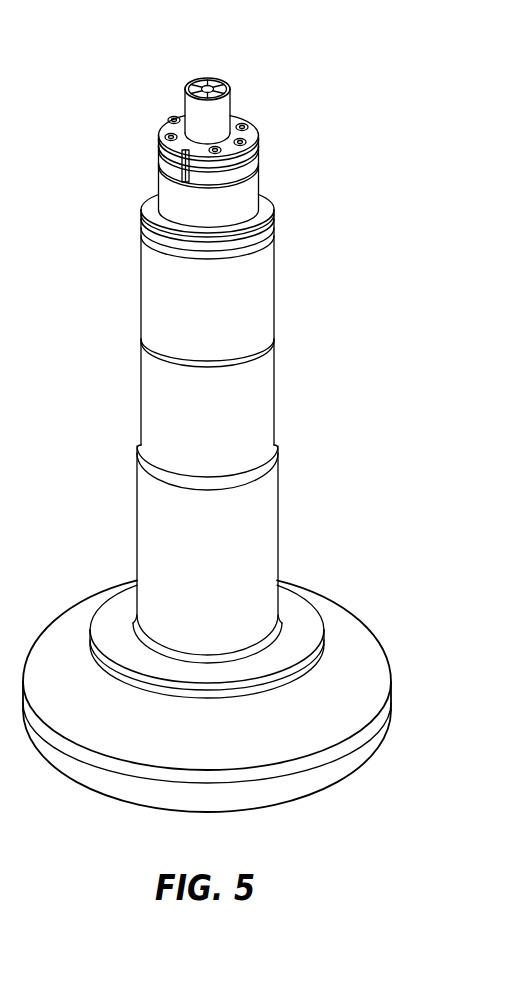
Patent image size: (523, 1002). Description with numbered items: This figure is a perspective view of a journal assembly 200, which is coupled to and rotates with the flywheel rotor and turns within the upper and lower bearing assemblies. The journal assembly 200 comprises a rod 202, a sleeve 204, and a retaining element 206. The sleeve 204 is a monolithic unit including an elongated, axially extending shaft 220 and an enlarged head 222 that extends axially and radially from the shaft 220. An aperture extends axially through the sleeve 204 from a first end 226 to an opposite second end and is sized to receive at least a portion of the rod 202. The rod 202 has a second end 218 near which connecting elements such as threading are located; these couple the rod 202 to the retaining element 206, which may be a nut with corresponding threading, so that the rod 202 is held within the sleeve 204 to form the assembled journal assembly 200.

The journal assembly 200 is at (355, 153).
The rod 202 is at (212, 114).
The sleeve 204 is at (251, 303).
The retaining element 206 is at (158, 150).
The second end 218 is at (194, 78).
The shaft 220 is at (245, 408).
The enlarged head 222 is at (350, 657).
The first end 226 is at (238, 812).